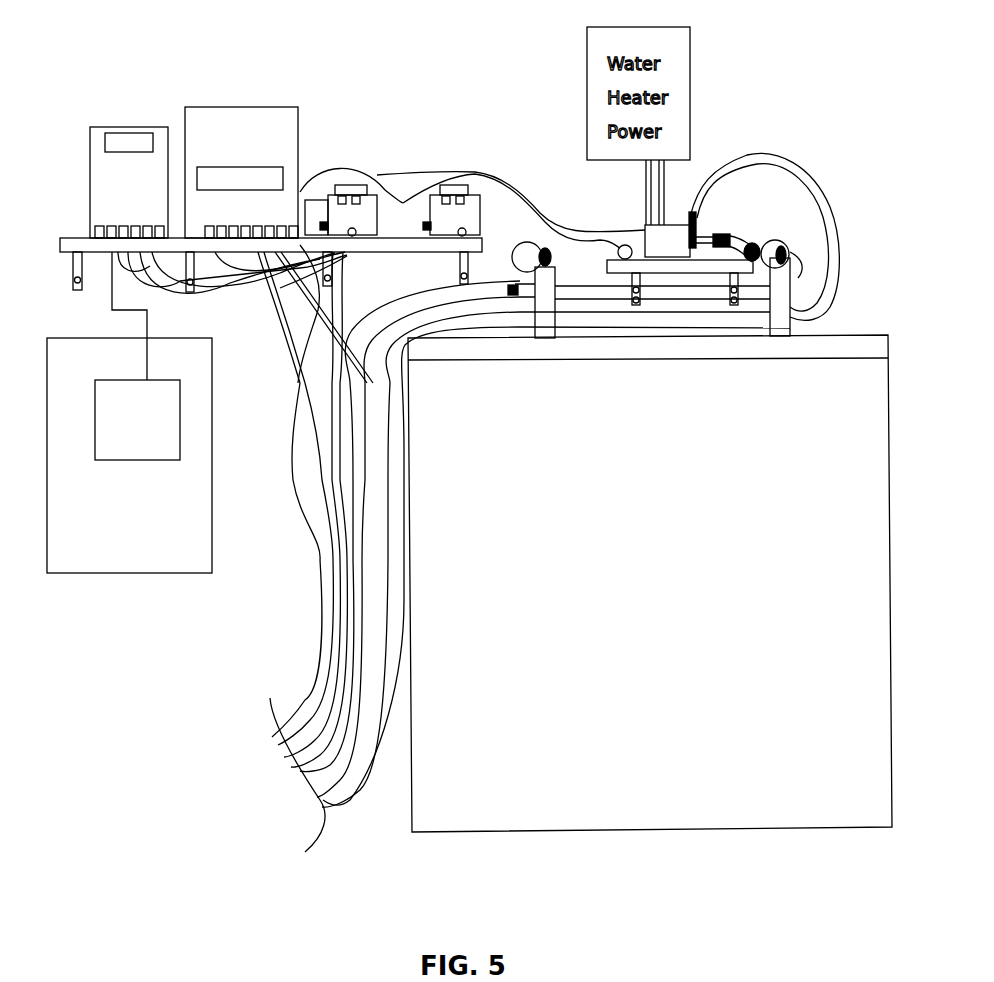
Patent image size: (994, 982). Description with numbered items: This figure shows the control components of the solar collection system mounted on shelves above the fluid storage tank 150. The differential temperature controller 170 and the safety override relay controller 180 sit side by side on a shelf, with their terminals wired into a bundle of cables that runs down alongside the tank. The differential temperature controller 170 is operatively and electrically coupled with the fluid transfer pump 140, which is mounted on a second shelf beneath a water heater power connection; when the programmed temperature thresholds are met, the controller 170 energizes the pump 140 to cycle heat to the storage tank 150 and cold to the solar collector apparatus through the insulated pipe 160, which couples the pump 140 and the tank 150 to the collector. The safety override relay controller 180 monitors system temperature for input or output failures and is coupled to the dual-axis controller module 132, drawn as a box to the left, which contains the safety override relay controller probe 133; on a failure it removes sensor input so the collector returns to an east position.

The safety override relay controller 180 is at (120, 127).
The differential temperature controller 170 is at (250, 107).
The fluid transfer pump 140 is at (688, 212).
The insulated pipe 160 is at (738, 232).
The fluid storage tank 150 is at (677, 570).
The dual-axis controller module 132 is at (47, 543).
The safety override relay controller probe 133 is at (158, 446).